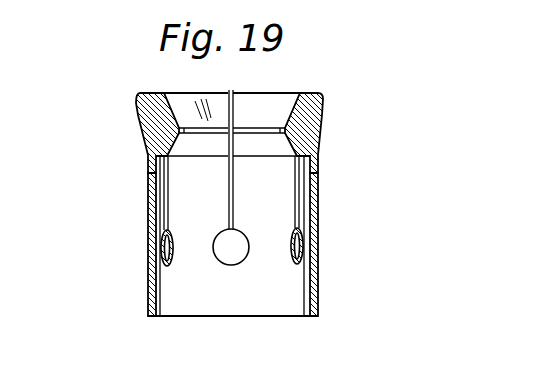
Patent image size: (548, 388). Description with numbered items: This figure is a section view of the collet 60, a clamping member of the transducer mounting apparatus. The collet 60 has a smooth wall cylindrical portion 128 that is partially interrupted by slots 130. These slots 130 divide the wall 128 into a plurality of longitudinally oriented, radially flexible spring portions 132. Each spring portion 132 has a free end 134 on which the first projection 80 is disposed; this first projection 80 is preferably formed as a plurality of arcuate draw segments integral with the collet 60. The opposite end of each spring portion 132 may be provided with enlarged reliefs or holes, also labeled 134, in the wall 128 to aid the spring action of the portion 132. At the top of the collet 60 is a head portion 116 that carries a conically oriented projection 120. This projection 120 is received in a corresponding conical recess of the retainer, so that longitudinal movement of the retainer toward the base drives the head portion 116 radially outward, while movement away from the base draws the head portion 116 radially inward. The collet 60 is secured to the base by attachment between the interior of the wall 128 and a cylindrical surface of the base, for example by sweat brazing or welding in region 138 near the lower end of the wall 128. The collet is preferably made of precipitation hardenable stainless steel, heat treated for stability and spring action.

The collet 60 is at (228, 166).
The head portion 116 is at (133, 86).
The conically oriented projection 120 is at (138, 117).
The first projection 80 is at (152, 157).
The smooth wall cylindrical portion 128 is at (320, 268).
The slots 130 is at (282, 204).
The spring portions 132 is at (207, 222).
The free end 134 is at (228, 258).
The region 138 is at (194, 312).